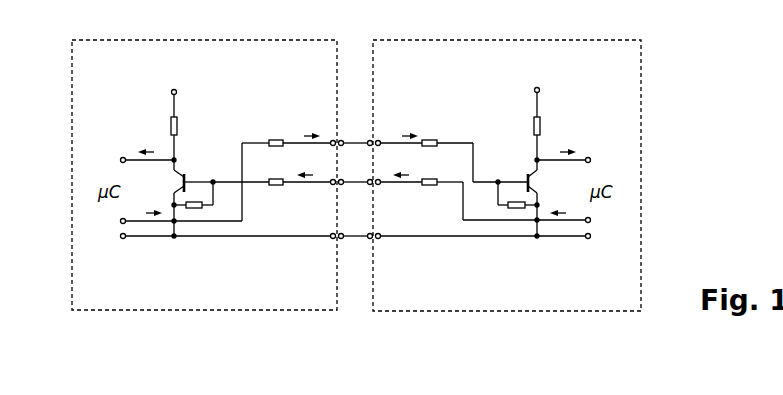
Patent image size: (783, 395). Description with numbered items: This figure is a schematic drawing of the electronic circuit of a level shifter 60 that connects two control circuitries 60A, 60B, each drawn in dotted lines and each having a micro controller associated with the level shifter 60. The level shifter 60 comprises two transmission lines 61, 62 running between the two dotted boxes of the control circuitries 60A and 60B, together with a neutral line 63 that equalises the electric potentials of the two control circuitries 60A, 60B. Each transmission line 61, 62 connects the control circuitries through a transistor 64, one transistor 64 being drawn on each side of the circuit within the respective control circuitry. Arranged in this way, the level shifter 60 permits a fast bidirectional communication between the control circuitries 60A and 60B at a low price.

The control circuitry 60A is at (248, 27).
The control circuitry 60B is at (533, 27).
The level shifter 60 is at (404, 116).
The transmission line 61 is at (452, 143).
The transmission line 62 is at (401, 183).
The neutral line 63 is at (266, 237).
The transistor 64 is at (185, 177).